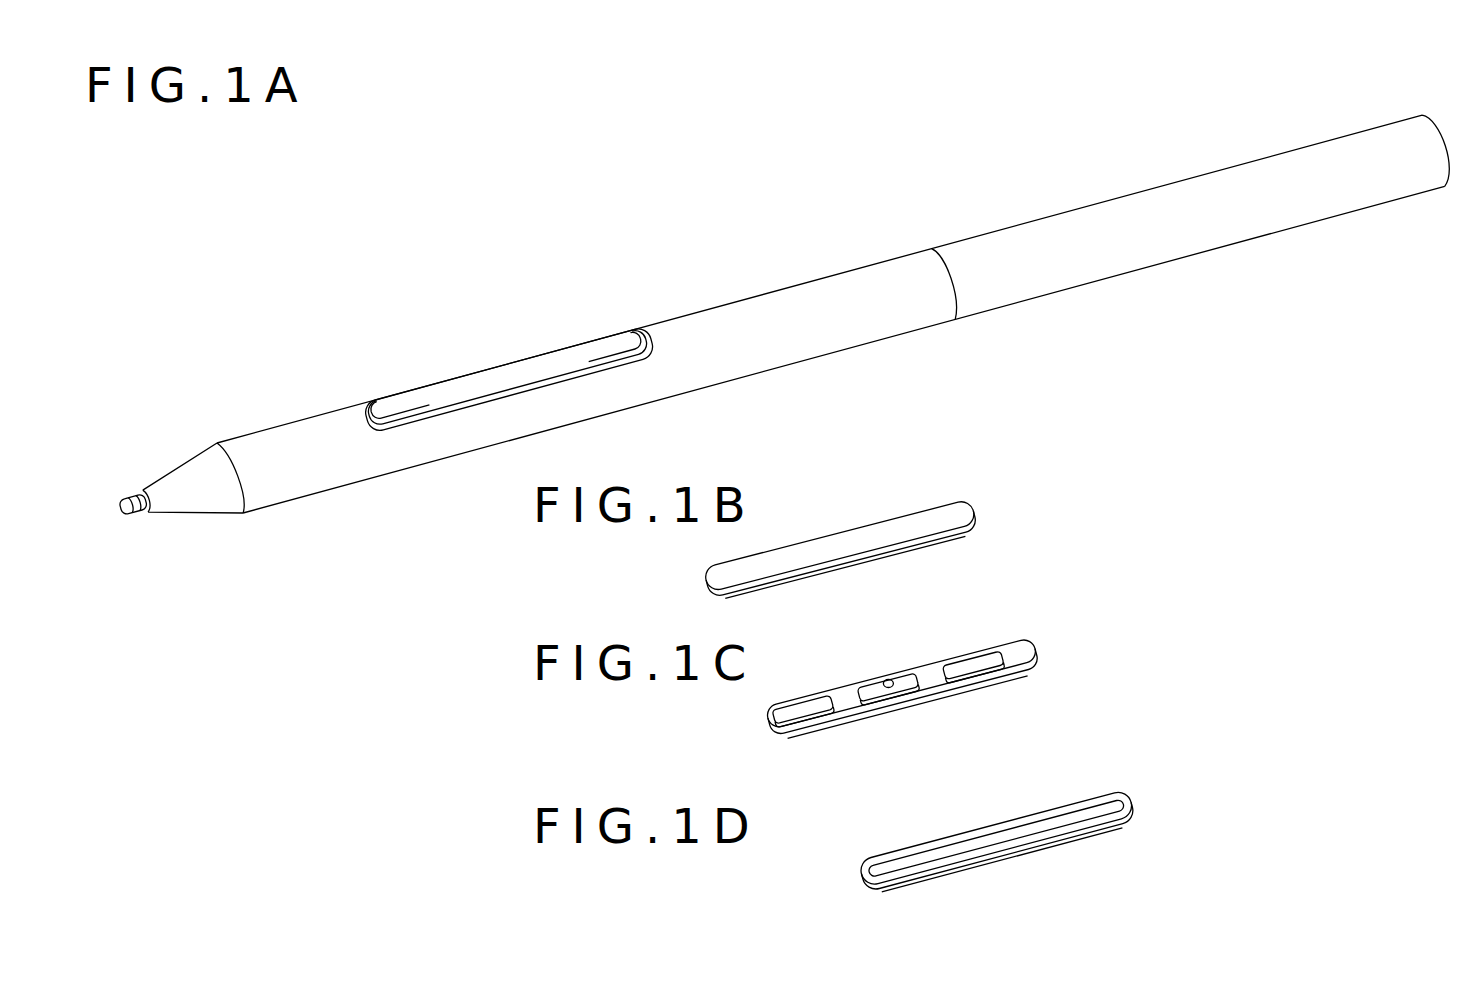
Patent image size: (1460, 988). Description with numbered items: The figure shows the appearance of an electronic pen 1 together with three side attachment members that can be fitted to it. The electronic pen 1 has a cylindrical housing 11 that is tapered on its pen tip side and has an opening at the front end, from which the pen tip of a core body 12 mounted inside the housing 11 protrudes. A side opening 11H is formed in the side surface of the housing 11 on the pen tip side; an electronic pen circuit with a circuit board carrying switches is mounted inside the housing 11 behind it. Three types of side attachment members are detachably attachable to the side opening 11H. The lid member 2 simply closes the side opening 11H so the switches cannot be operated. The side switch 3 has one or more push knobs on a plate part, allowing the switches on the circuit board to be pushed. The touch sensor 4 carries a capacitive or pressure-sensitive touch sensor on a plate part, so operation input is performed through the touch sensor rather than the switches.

In FIG. 1A, the electronic pen 1 is at (773, 342).
In FIG. 1A, the lid member 2 is at (476, 396).
In FIG. 1B, the lid member 2 is at (869, 503).
In FIG. 1C, the side switch 3 is at (906, 652).
In FIG. 1D, the touch sensor 4 is at (997, 804).
In FIG. 1A, the housing 11 is at (683, 394).
In FIG. 1A, the side opening 11H is at (637, 331).
In FIG. 1A, the core body 12 is at (124, 506).